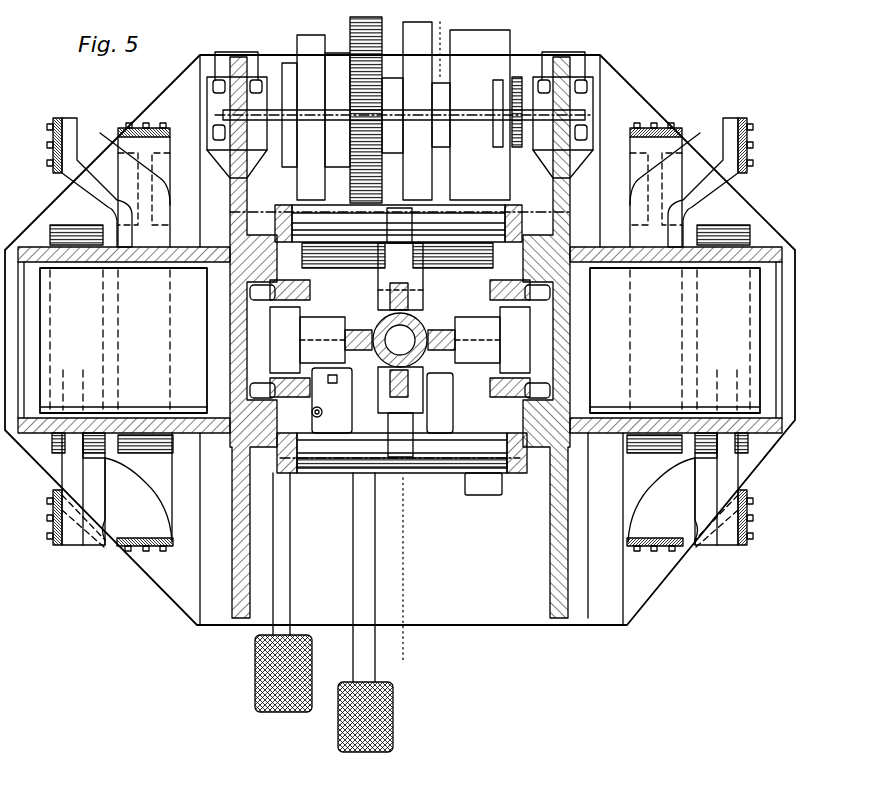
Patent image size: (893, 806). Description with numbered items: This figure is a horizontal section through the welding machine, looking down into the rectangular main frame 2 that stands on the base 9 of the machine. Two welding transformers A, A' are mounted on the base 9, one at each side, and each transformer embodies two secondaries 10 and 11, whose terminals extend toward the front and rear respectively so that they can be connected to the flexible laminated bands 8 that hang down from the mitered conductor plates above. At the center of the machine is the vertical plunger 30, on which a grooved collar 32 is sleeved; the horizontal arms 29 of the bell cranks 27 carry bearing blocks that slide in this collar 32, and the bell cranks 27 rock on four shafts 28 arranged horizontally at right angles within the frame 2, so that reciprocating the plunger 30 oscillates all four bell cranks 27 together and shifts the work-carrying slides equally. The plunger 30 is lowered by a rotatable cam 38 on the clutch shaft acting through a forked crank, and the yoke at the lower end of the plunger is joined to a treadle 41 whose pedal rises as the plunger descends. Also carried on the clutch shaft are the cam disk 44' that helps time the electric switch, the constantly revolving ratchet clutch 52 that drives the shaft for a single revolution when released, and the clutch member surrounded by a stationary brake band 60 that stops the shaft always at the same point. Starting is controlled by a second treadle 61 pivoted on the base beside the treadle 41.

The main frame 2 is at (556, 577).
The flexible laminated band 8 is at (52, 157).
The base 9 is at (643, 597).
The secondary 10 is at (63, 470).
The secondary 11 is at (78, 178).
The bell crank 27 is at (432, 485).
The shaft 28 is at (575, 222).
The horizontal arm 29 is at (422, 420).
The vertical plunger 30 is at (427, 322).
The grooved collar 32 is at (424, 356).
The rotatable cam 38 is at (426, 111).
The treadle 41 is at (353, 597).
The cam disk 44' is at (521, 115).
The ratchet clutch 52 is at (365, 190).
The brake band 60 is at (300, 184).
The treadle 61 is at (255, 674).
The welding transformer A is at (123, 340).
The welding transformer A' is at (675, 340).